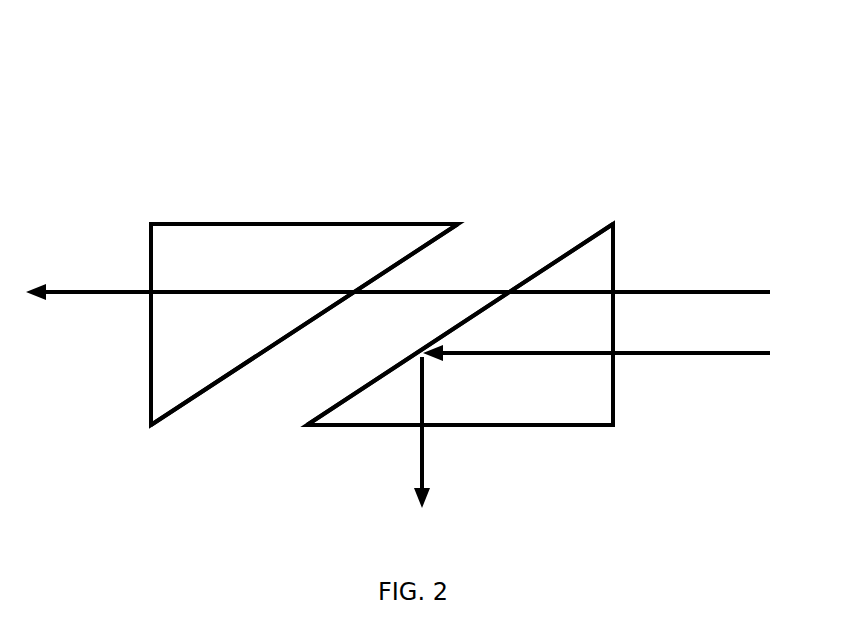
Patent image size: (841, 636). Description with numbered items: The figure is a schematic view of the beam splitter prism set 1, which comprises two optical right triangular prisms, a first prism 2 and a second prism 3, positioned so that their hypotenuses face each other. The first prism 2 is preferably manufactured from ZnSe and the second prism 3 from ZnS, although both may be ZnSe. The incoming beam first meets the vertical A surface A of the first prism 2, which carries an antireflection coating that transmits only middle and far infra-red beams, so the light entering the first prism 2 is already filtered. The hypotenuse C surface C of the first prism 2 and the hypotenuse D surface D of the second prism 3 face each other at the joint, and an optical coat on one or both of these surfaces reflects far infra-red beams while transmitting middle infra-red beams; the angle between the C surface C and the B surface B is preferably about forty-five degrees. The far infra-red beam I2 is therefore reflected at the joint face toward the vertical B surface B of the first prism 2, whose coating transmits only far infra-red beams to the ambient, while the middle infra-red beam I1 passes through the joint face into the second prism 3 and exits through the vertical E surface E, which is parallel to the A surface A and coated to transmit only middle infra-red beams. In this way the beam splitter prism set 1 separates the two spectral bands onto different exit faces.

The beam splitter prism set 1 is at (421, 110).
The first prism 2 is at (553, 393).
The second prism 3 is at (202, 255).
The A surface A is at (620, 400).
The B surface B is at (510, 430).
The C surface C is at (541, 265).
The D surface D is at (228, 380).
The E surface E is at (145, 375).
The middle infra-red beam I1 is at (693, 284).
The far infra-red beam I2 is at (720, 362).